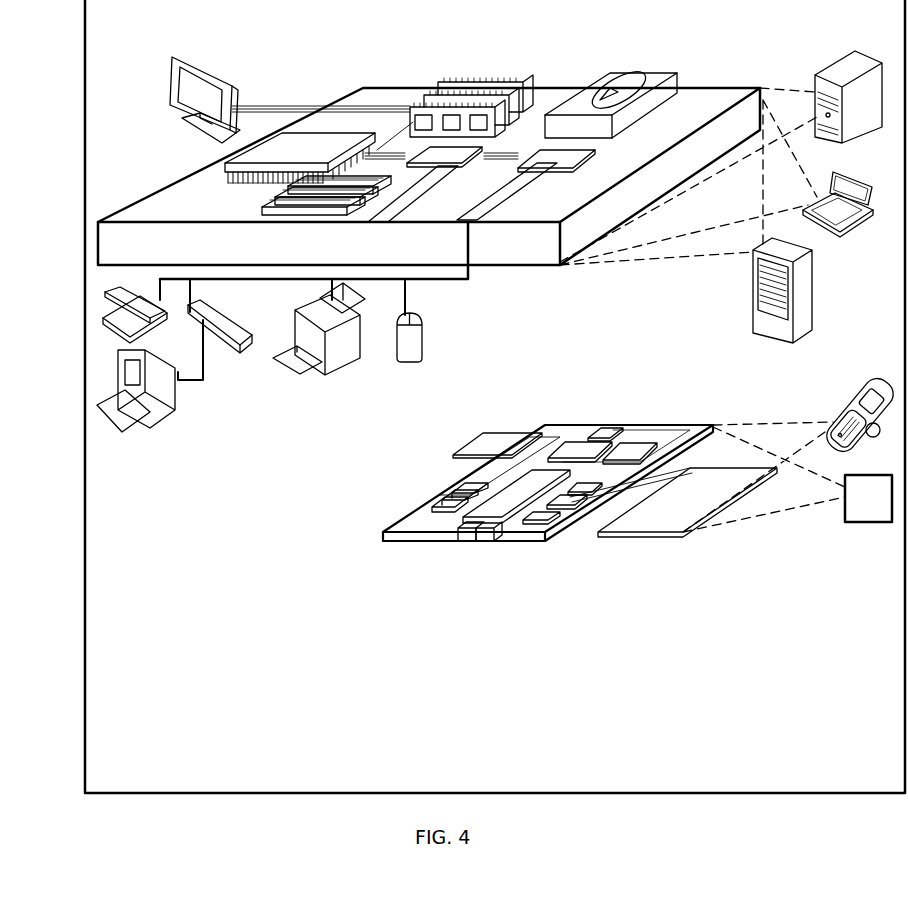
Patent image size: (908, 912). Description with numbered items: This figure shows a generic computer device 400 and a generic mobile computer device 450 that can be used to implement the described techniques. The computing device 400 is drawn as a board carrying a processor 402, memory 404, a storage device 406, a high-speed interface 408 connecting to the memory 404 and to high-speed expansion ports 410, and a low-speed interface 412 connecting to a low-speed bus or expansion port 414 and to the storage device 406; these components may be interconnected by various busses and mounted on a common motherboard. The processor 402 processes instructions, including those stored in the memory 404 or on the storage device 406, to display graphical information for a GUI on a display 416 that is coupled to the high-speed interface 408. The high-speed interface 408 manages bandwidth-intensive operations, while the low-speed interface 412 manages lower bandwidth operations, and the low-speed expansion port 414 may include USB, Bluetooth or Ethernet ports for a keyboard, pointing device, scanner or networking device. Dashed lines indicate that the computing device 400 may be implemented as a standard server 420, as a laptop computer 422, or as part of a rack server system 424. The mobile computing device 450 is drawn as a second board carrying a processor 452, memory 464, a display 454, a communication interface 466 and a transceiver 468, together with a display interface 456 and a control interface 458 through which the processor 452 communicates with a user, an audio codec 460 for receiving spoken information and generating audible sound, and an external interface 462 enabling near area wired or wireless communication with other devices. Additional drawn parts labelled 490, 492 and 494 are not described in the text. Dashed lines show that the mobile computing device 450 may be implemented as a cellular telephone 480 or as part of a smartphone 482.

The computing device 400 is at (307, 69).
The processor 402 is at (222, 168).
The memory 404 is at (455, 82).
The storage device 406 is at (606, 70).
The high-speed interface 408 is at (427, 150).
The high-speed expansion ports 410 is at (278, 202).
The low-speed interface 412 is at (560, 155).
The low-speed expansion port 414 is at (480, 240).
The display 416 is at (176, 62).
The standard server 420 is at (815, 72).
The laptop computer 422 is at (831, 172).
The rack server system 424 is at (752, 300).
The mobile computing device 450 is at (526, 404).
The processor 452 is at (499, 532).
The display 454 is at (683, 537).
The display interface 456 is at (552, 540).
The control interface 458 is at (584, 510).
The audio codec 460 is at (588, 500).
The external interface 462 is at (474, 536).
The memory 464 is at (442, 504).
The communication interface 466 is at (574, 446).
The transceiver 468 is at (634, 450).
The cellular telephone 480 is at (866, 386).
The smartphone 482 is at (854, 476).
The component 490 is at (614, 426).
The component 492 is at (530, 436).
The component 494 is at (485, 432).